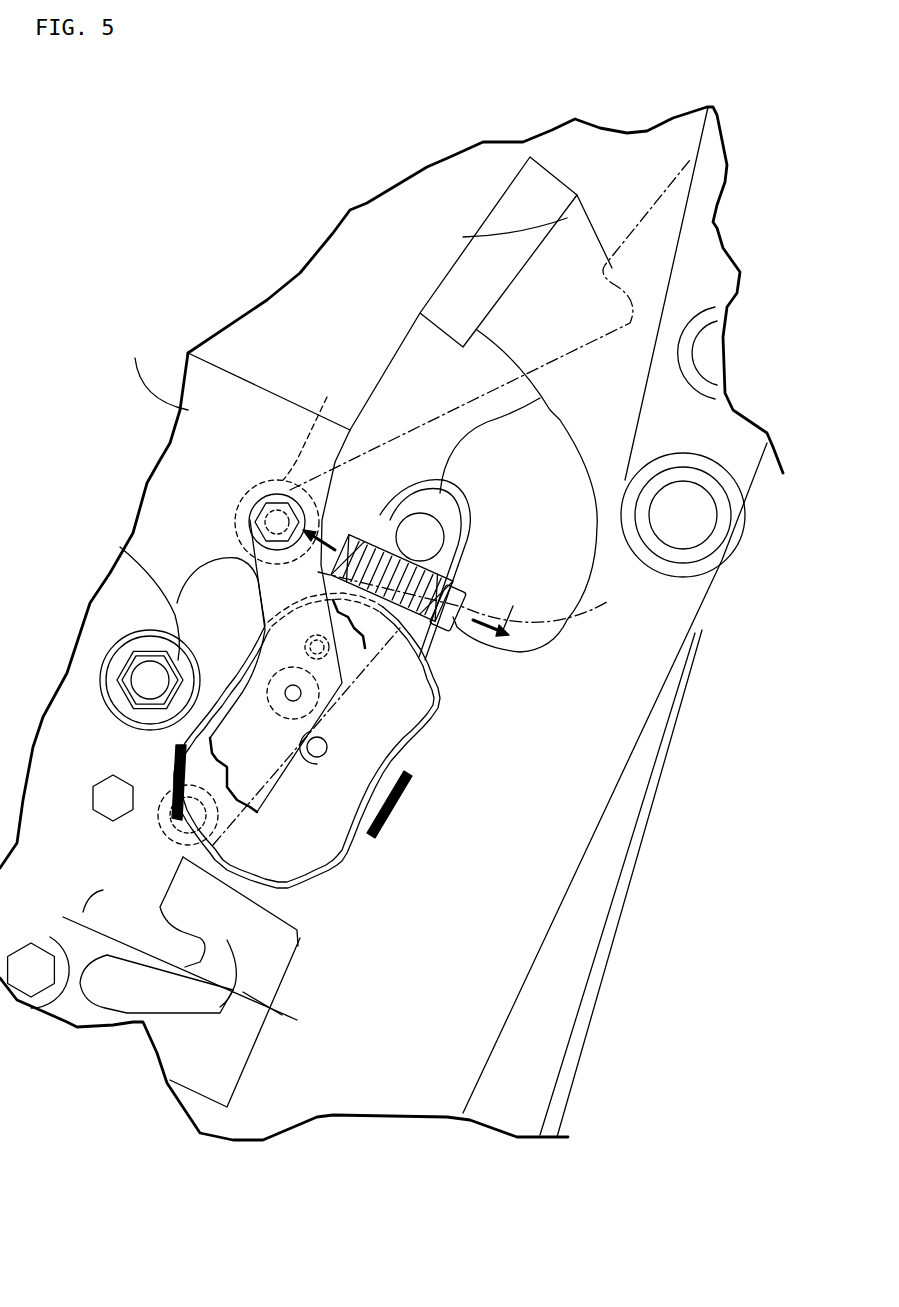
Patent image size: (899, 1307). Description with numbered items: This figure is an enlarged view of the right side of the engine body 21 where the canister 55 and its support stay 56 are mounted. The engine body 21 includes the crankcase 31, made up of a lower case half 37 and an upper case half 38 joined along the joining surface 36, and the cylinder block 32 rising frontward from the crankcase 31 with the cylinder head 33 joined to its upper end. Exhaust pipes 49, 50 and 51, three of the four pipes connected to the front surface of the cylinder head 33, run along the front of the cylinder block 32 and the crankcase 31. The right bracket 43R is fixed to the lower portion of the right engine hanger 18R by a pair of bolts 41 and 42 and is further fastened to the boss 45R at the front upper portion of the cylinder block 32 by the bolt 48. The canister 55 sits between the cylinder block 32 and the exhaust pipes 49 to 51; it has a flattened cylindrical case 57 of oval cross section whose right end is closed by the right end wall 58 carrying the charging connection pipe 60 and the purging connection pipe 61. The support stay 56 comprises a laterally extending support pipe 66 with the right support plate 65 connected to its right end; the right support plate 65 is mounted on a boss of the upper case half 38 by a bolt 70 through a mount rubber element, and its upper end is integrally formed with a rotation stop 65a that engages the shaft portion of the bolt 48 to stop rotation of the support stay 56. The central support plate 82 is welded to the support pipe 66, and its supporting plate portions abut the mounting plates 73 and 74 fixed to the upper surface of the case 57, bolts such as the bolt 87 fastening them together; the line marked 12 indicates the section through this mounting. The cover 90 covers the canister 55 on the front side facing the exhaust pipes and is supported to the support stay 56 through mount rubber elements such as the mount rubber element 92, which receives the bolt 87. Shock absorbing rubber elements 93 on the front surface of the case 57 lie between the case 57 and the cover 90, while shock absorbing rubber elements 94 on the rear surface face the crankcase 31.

The right engine hanger 18R is at (700, 185).
The engine body 21 is at (382, 383).
The cylinder head 33 is at (567, 218).
The cylinder block 32 is at (154, 372).
The right bracket 43R is at (590, 350).
The bolt 42 is at (690, 353).
The bolt 41 is at (667, 533).
The exhaust pipe 49 is at (377, 1057).
The exhaust pipe 50 is at (563, 1007).
The exhaust pipe 51 is at (613, 918).
The cover 90 is at (447, 713).
The bolt 87 is at (550, 653).
The central support plate 82 is at (490, 445).
The support pipe 66 is at (468, 492).
The mounting plate 73 is at (450, 520).
The mounting plate 74 is at (388, 530).
The mount rubber element 92 is at (468, 590).
The section line 12 is at (416, 559).
The bolt 48 is at (268, 492).
The rotation stop 65a is at (317, 427).
The boss 45R is at (183, 603).
The right end wall 58 is at (325, 860).
The canister 55 is at (435, 708).
The case 57 is at (420, 722).
The support stay 56 is at (427, 723).
The shock absorbing rubber element 93 is at (405, 812).
The shock absorbing rubber element 94 is at (177, 762).
The right support plate 65 is at (250, 727).
The purging connection pipe 61 is at (347, 673).
The charging connection pipe 60 is at (322, 758).
The bolt 70 is at (228, 838).
The joining surface 36 is at (173, 967).
The upper case half 38 is at (92, 835).
The lower case half 37 is at (110, 1017).
The crankcase 31 is at (158, 1095).